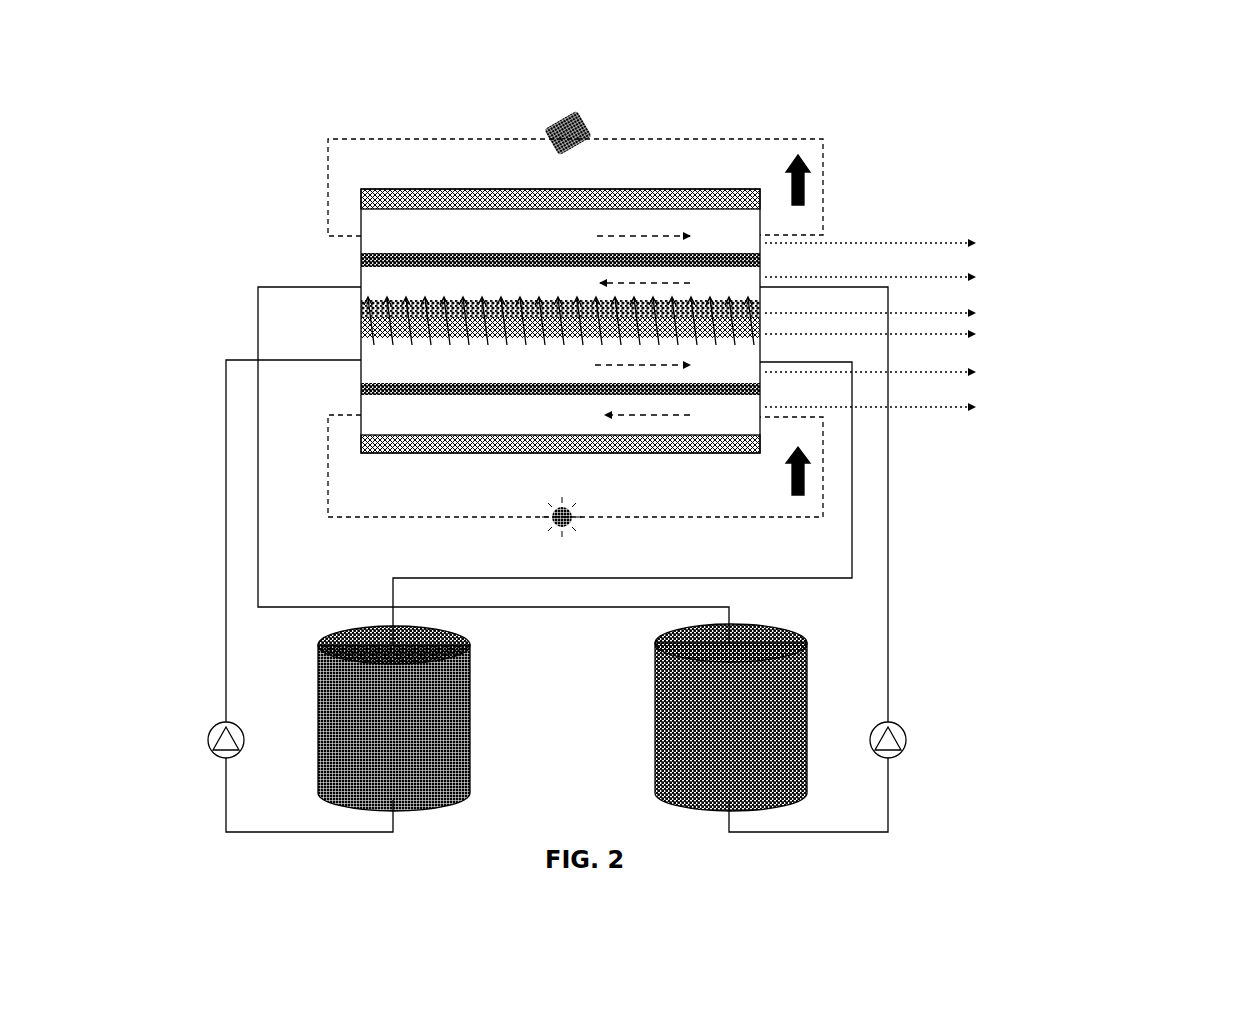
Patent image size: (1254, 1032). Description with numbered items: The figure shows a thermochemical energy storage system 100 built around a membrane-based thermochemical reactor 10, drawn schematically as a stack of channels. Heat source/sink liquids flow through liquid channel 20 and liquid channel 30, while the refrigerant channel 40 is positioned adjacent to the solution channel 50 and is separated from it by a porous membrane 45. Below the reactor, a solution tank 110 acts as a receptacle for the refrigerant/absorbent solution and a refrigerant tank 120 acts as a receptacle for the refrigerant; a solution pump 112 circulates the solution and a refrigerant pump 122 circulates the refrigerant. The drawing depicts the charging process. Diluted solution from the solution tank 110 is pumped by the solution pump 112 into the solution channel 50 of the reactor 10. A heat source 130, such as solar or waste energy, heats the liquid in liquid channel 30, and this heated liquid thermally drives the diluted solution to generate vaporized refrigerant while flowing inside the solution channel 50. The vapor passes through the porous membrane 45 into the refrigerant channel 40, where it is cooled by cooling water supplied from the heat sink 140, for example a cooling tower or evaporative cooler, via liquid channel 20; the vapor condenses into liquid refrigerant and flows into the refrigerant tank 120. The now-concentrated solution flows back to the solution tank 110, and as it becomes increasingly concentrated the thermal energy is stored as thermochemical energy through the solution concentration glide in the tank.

The thermochemical energy storage system 100 is at (866, 121).
The membrane-based reactor 10 is at (496, 321).
The liquid channel 20 is at (398, 246).
The liquid channel 30 is at (398, 423).
The refrigerant channel 40 is at (398, 293).
The porous membrane 45 is at (772, 320).
The solution channel 50 is at (398, 375).
The solution tank 110 is at (442, 718).
The solution pump 112 is at (181, 753).
The refrigerant tank 120 is at (769, 717).
The refrigerant pump 122 is at (946, 747).
The heat source 130 is at (518, 531).
The heat sink 140 is at (601, 126).